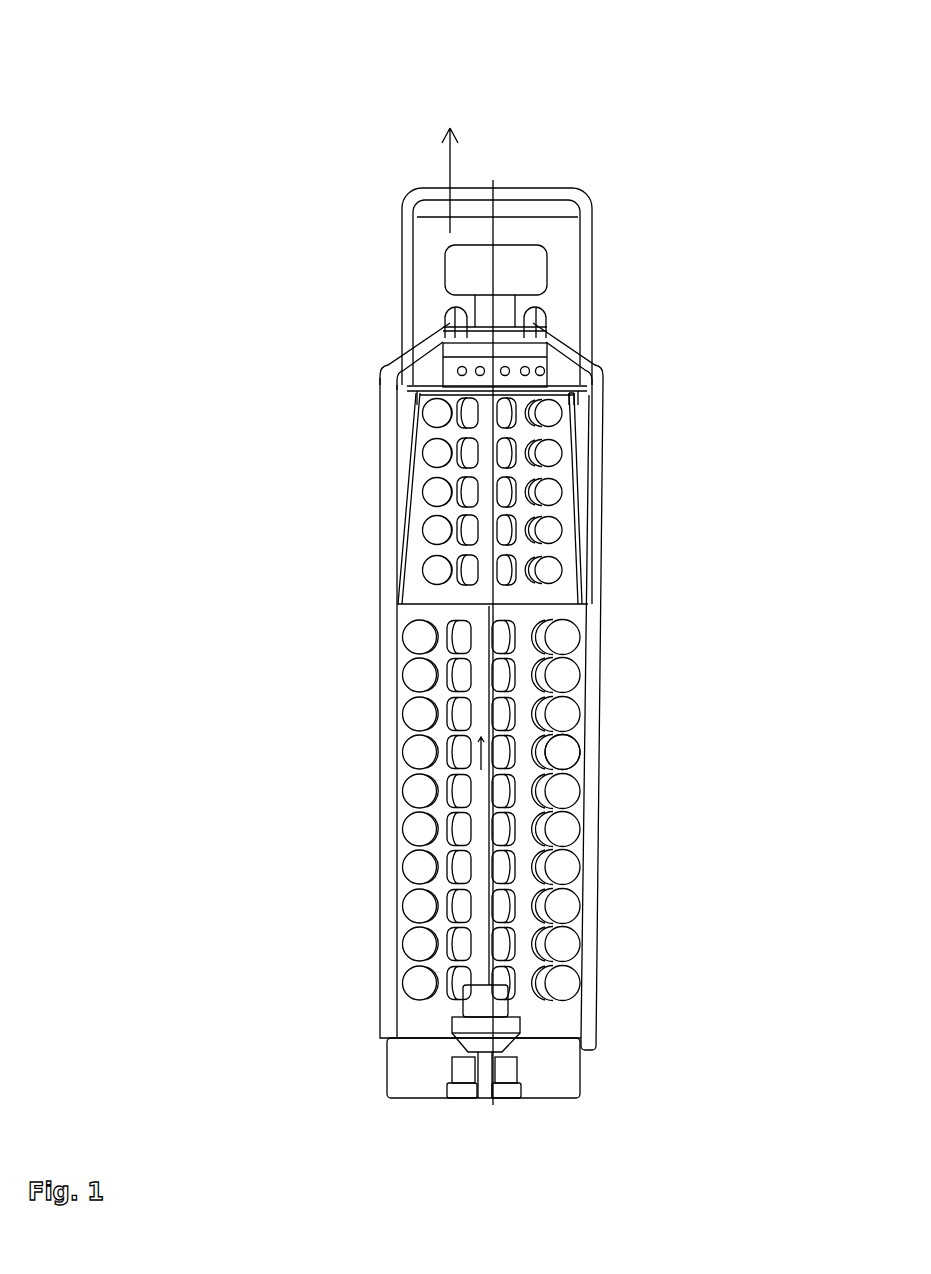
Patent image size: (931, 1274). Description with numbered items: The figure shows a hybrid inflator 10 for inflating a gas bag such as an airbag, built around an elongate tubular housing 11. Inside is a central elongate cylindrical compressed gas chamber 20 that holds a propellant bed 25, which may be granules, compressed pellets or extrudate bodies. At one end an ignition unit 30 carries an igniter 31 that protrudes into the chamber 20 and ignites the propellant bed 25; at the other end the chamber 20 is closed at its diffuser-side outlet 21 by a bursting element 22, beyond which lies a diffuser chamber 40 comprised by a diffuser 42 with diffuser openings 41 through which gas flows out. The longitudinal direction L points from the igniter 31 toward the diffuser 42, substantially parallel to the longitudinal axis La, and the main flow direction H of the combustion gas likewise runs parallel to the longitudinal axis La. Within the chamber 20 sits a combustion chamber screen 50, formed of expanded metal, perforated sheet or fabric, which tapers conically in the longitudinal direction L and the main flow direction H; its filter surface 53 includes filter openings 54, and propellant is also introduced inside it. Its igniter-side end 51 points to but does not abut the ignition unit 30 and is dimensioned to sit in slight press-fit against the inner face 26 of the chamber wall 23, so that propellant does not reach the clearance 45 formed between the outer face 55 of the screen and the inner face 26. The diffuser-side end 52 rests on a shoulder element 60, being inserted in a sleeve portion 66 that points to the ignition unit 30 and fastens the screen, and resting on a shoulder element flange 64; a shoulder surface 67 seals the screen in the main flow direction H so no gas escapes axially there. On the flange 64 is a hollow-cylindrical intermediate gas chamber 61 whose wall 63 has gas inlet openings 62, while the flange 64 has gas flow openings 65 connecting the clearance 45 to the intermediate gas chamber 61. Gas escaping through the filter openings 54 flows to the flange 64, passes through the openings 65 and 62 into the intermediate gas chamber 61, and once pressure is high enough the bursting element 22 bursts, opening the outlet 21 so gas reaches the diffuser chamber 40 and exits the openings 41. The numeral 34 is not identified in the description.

The inflator 10 is at (689, 97).
The housing 11 is at (598, 840).
The chamber 20 is at (580, 697).
The diffuser-side outlet 21 is at (547, 312).
The bursting element 22 is at (455, 327).
The chamber wall 23 is at (597, 497).
The propellant bed 25 is at (548, 752).
The inner face 26 is at (395, 718).
The ignition unit 30 is at (567, 1085).
The igniter 31 is at (495, 1002).
The bracket lower part 34 is at (405, 548).
The diffuser chamber 40 is at (533, 218).
The diffuser openings 41 is at (450, 258).
The diffuser 42 is at (580, 201).
The clearance 45 is at (573, 449).
The combustion chamber screen 50 is at (577, 600).
The igniter-side end 51 is at (400, 610).
The diffuser-side end 52 is at (443, 397).
The filter surface 53 is at (578, 540).
The filter openings 54 is at (580, 473).
The outer face 55 is at (417, 467).
The shoulder element 60 is at (573, 367).
The intermediate gas chamber 61 is at (465, 355).
The gas inlet openings 62 is at (455, 360).
The wall 63 is at (565, 352).
The shoulder element flange 64 is at (606, 382).
The gas flow openings 65 is at (445, 375).
The sleeve portion 66 is at (585, 413).
The shoulder surface 67 is at (440, 402).
The main flow direction H is at (478, 770).
The longitudinal direction L is at (450, 171).
The longitudinal axis La is at (493, 635).